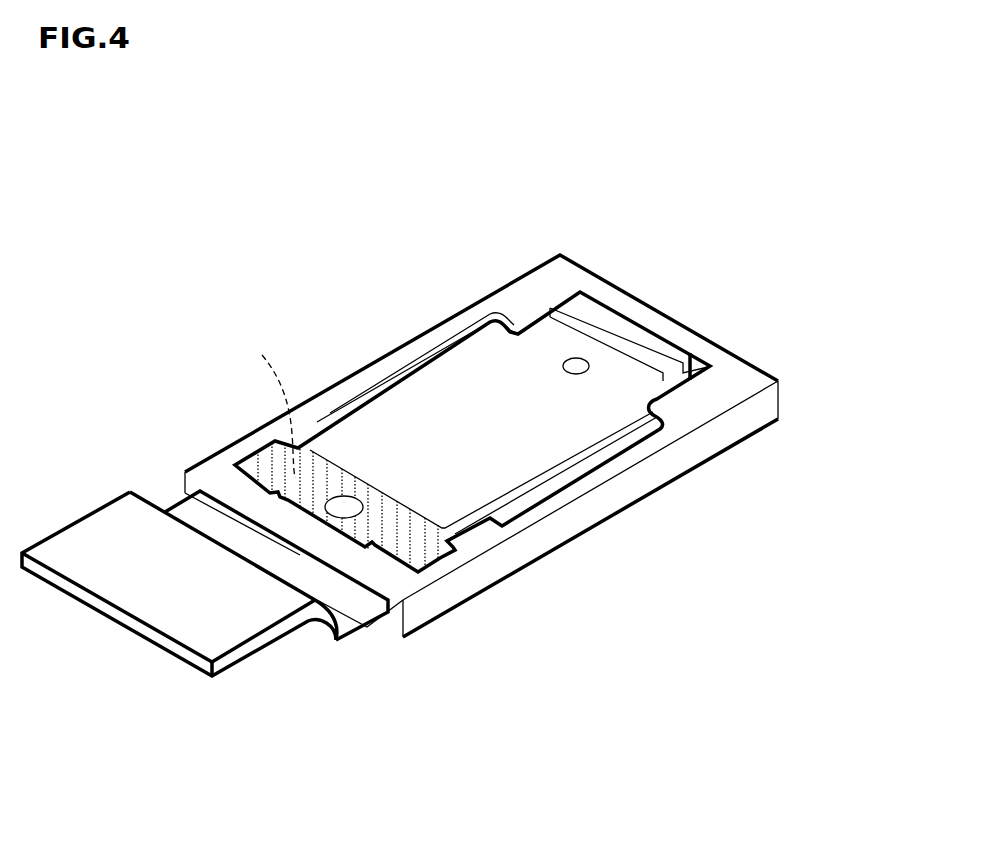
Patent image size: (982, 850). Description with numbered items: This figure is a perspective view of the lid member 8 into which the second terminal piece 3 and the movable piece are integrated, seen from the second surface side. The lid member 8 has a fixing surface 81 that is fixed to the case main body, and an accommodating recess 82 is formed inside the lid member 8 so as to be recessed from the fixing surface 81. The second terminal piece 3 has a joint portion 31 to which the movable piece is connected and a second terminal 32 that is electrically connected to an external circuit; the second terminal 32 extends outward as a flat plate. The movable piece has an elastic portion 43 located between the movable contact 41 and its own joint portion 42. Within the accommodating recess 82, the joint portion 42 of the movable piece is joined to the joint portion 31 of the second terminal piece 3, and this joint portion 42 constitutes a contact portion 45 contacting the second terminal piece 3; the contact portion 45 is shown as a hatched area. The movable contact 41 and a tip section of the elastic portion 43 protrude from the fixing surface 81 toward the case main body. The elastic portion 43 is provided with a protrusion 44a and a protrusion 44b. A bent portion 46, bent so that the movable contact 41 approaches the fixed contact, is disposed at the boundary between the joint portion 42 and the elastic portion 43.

The second terminal piece 3 is at (110, 523).
The lid member 8 is at (645, 313).
The joint portion 31 is at (267, 404).
The second terminal 32 is at (222, 617).
The movable contact 41 is at (647, 350).
The joint portion 42 is at (420, 550).
The elastic portion 43 is at (412, 425).
The protrusion 44a is at (348, 503).
The protrusion 44b is at (578, 357).
The contact portion 45 is at (392, 535).
The bent portion 46 is at (343, 470).
The fixing surface 81 is at (752, 378).
The accommodating recess 82 is at (700, 372).